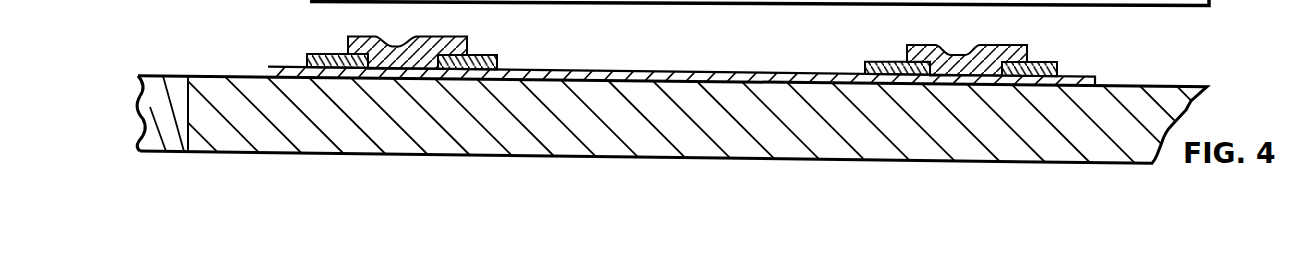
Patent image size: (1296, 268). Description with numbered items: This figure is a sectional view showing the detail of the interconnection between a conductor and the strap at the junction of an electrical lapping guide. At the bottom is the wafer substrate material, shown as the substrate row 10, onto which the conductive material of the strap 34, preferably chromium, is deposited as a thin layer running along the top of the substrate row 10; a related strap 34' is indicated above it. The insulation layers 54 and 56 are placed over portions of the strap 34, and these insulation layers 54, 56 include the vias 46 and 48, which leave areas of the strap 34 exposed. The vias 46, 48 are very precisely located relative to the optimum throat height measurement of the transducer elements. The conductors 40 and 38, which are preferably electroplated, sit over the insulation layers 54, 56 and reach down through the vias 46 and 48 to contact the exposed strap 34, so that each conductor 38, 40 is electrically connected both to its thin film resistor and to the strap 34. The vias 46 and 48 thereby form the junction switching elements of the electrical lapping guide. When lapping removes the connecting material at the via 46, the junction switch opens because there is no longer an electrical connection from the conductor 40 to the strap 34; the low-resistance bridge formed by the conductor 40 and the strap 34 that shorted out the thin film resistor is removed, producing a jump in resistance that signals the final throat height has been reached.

The substrate row 10 is at (1150, 95).
The strap 34 is at (681, 64).
The insulating layer (adjacent figure) 34' is at (759, 16).
The conductor 38 is at (1003, 50).
The conductor 40 is at (438, 43).
The via 46 is at (407, 62).
The via 48 is at (967, 68).
The insulation layer 54 is at (480, 62).
The insulation layer 56 is at (1047, 63).